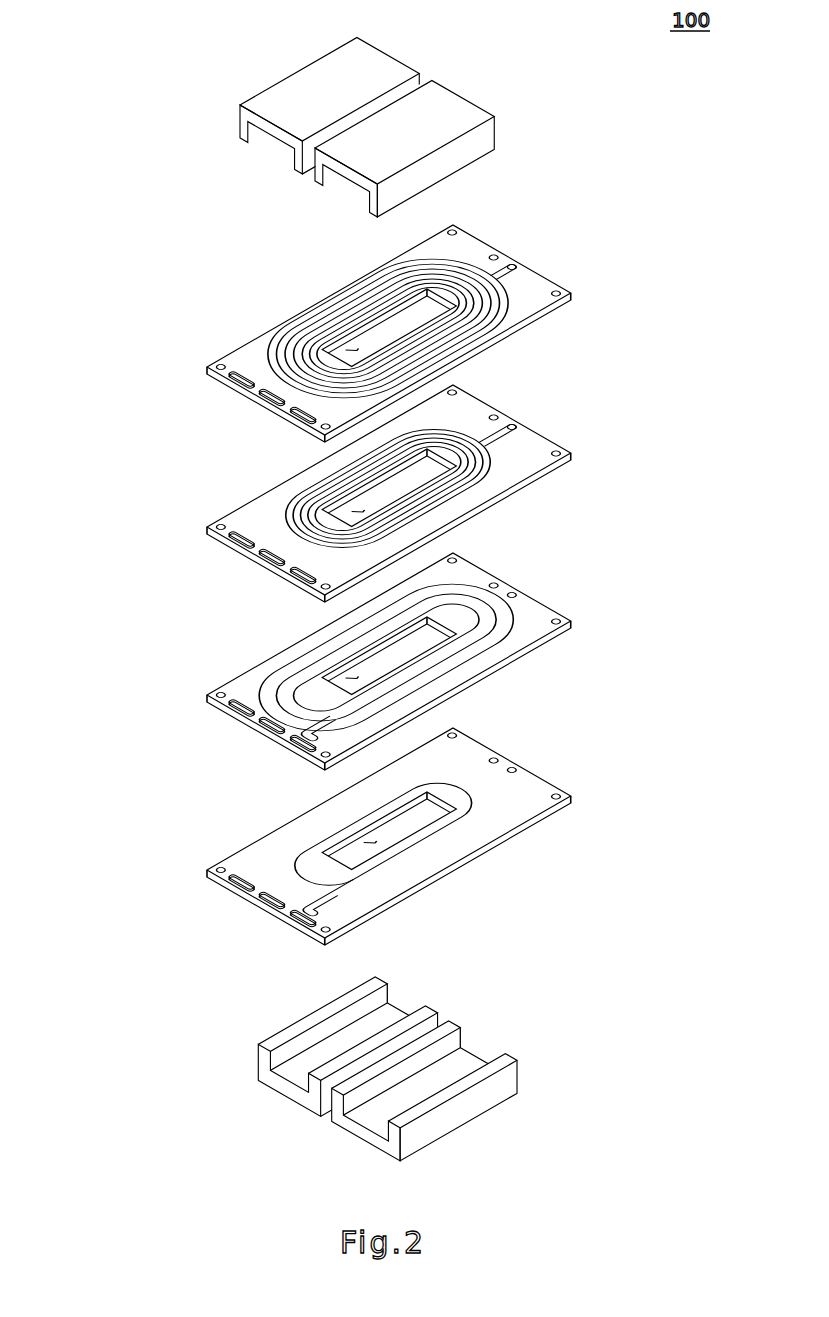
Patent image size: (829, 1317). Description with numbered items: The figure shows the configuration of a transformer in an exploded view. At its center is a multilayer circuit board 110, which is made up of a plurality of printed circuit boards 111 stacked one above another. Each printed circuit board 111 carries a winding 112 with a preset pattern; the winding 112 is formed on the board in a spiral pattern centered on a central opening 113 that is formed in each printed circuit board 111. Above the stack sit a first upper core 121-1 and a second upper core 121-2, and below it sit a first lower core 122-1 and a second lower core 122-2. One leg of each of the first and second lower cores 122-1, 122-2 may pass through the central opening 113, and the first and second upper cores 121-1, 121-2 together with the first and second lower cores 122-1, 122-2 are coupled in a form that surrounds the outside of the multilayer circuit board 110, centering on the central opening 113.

The multilayer circuit board 110 is at (451, 585).
The printed circuit board 111 is at (553, 283).
The winding 112 is at (505, 318).
The central opening 113 is at (348, 351).
The first upper core 121-1 is at (240, 117).
The second upper core 121-2 is at (498, 132).
The first lower core 122-1 is at (257, 1061).
The second lower core 122-2 is at (503, 1080).